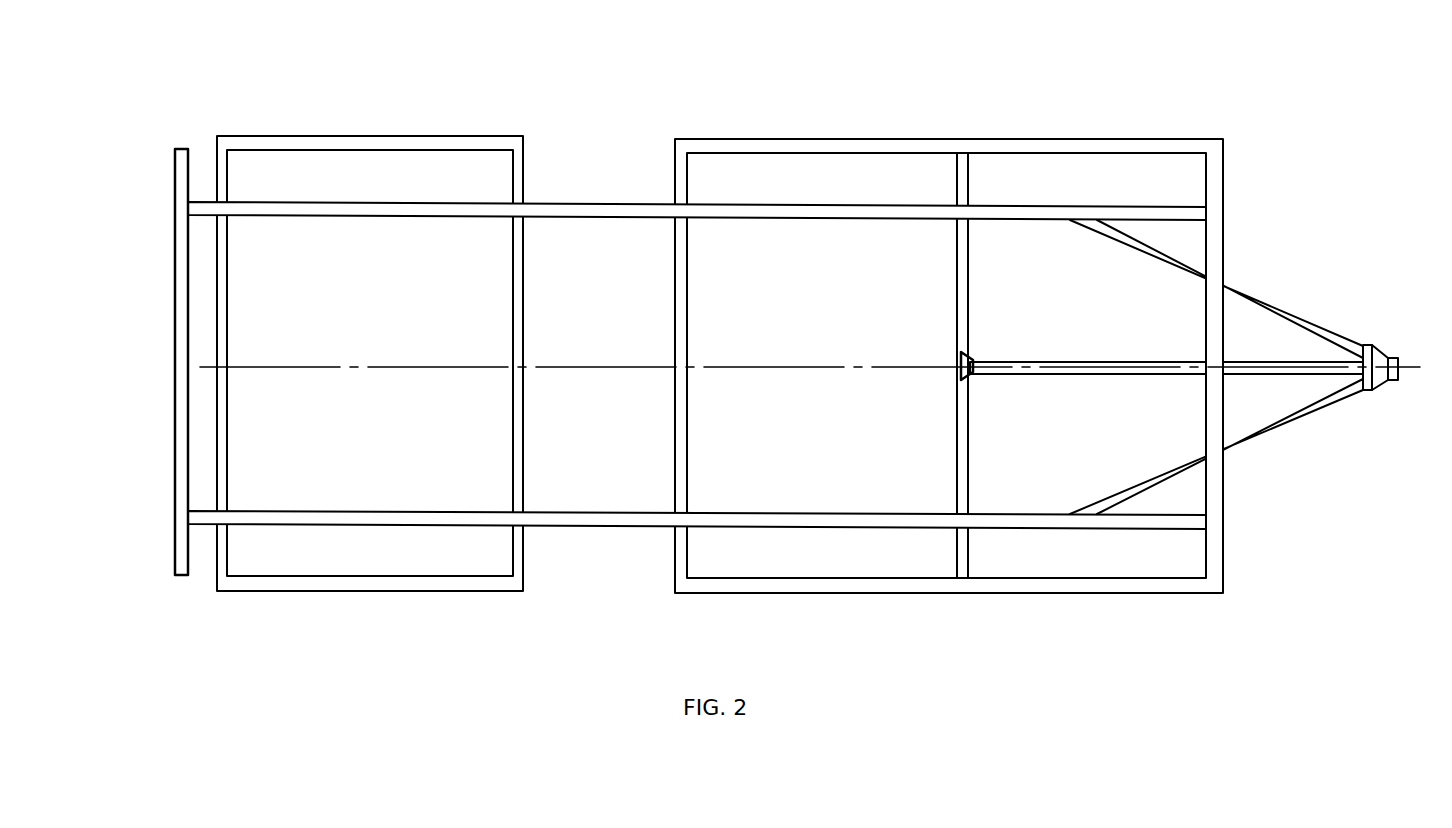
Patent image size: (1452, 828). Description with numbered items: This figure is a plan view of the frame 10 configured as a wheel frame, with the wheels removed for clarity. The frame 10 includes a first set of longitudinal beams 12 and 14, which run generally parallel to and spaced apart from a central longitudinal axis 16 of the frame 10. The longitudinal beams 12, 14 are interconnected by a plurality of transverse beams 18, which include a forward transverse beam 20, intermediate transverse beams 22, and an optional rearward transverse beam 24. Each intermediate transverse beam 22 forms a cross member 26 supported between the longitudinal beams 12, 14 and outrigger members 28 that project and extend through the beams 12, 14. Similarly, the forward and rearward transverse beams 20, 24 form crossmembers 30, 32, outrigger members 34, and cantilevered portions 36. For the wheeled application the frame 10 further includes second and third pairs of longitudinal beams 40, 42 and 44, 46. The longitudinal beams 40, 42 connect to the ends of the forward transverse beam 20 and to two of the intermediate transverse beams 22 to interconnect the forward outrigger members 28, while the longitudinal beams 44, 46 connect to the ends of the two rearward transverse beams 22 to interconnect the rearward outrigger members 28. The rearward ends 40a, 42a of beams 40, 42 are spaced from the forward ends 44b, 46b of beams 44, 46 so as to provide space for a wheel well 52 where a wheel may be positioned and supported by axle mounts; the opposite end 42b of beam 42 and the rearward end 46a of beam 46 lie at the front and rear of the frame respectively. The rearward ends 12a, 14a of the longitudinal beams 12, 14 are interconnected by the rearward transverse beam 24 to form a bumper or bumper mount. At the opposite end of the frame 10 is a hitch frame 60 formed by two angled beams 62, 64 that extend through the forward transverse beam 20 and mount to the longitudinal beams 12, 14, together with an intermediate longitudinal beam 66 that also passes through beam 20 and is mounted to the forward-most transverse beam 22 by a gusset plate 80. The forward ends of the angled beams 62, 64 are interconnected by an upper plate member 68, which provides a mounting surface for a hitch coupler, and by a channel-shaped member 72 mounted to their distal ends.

The frame 10 is at (1226, 112).
The longitudinal beam 12 is at (560, 208).
The rearward end of longitudinal beam 12a is at (178, 210).
The longitudinal beam 14 is at (578, 516).
The rearward end of longitudinal beam 14a is at (178, 517).
The central longitudinal axis 16 is at (1400, 362).
The transverse beam 18 is at (497, 183).
The forward transverse beam 20 is at (1226, 262).
The intermediate transverse beam 22 is at (228, 335).
The rearward transverse beam 24 is at (178, 329).
The cross member 26 is at (225, 272).
The outrigger member 28 is at (236, 182).
The crossmember 30 is at (1226, 337).
The crossmember 32 is at (178, 404).
The outrigger member 34 is at (1226, 222).
The cantilevered portion 36 is at (172, 170).
The longitudinal beam 40 is at (1068, 142).
The rearward end of longitudinal beam 40a is at (676, 141).
The longitudinal beam 42 is at (1095, 598).
The rearward end of longitudinal beam 42a is at (676, 597).
The front end of bottom rail 42b is at (1222, 596).
The longitudinal beam 44 is at (408, 137).
The forward end of longitudinal beam 44b is at (530, 143).
The longitudinal beam 46 is at (318, 590).
The rear end of bottom rail 46a is at (212, 588).
The forward end of longitudinal beam 46b is at (523, 590).
The wheel well 52 is at (603, 580).
The hitch frame 60 is at (1396, 345).
The angled beam 62 is at (1362, 341).
The angled beam 64 is at (1326, 413).
The longitudinal beam 66 is at (1075, 376).
The upper plate member 68 is at (1367, 385).
The channel-shaped member 72 is at (1396, 385).
The gusset plate 80 is at (976, 352).